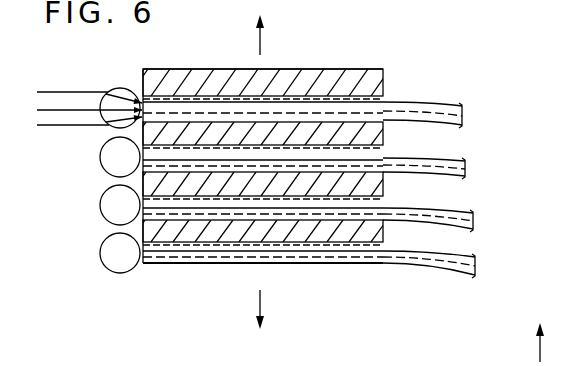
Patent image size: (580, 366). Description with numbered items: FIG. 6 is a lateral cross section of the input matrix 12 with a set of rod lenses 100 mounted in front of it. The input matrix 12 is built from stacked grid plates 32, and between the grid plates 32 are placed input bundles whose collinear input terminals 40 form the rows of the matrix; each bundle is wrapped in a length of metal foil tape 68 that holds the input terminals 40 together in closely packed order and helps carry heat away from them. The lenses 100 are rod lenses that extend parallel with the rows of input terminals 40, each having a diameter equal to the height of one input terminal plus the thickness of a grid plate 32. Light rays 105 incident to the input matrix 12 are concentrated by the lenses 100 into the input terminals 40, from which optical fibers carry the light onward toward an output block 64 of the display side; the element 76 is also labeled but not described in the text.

The input matrix 12 is at (318, 276).
The grid plate 32 is at (384, 86).
The input terminals 40 is at (183, 157).
The metal foil tape 68 is at (307, 150).
The light rays 105 is at (77, 124).
The lenses 100 is at (103, 237).
The output block 64 is at (570, 5).
The element 76 is at (539, 6).